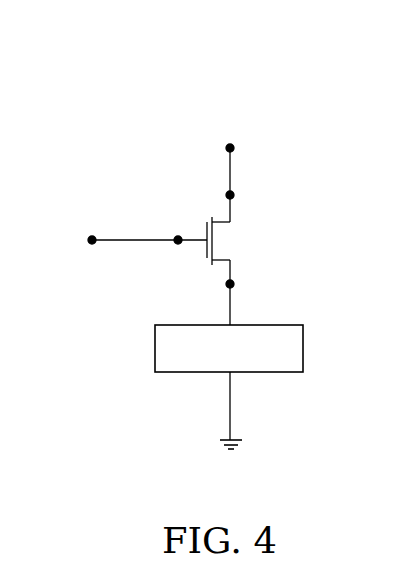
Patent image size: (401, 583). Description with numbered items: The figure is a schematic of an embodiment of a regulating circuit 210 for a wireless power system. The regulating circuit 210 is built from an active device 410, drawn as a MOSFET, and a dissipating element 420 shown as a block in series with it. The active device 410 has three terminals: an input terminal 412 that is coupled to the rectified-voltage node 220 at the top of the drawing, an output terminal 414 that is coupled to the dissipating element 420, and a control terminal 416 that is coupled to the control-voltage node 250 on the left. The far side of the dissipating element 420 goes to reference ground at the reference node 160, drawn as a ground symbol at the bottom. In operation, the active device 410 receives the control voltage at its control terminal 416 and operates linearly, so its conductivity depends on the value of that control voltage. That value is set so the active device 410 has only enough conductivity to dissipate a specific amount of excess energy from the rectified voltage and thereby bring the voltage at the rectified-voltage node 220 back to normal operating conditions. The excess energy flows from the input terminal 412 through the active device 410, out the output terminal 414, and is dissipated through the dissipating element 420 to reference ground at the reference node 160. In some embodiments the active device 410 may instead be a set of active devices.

The regulating circuit 210 is at (316, 81).
The VRECT node 220 is at (228, 146).
The VCONT node 250 is at (90, 238).
The active device 410 is at (213, 210).
The input terminal 412 is at (233, 197).
The output terminal 414 is at (233, 286).
The control terminal 416 is at (177, 237).
The dissipating element 420 is at (304, 345).
The VREF node 160 is at (224, 446).